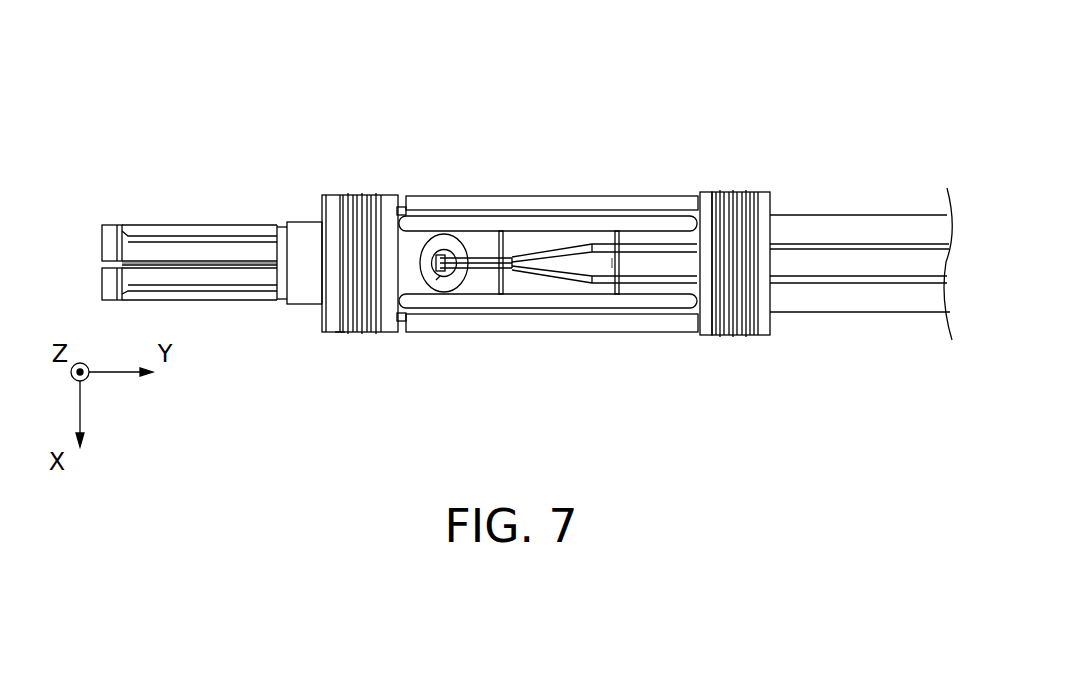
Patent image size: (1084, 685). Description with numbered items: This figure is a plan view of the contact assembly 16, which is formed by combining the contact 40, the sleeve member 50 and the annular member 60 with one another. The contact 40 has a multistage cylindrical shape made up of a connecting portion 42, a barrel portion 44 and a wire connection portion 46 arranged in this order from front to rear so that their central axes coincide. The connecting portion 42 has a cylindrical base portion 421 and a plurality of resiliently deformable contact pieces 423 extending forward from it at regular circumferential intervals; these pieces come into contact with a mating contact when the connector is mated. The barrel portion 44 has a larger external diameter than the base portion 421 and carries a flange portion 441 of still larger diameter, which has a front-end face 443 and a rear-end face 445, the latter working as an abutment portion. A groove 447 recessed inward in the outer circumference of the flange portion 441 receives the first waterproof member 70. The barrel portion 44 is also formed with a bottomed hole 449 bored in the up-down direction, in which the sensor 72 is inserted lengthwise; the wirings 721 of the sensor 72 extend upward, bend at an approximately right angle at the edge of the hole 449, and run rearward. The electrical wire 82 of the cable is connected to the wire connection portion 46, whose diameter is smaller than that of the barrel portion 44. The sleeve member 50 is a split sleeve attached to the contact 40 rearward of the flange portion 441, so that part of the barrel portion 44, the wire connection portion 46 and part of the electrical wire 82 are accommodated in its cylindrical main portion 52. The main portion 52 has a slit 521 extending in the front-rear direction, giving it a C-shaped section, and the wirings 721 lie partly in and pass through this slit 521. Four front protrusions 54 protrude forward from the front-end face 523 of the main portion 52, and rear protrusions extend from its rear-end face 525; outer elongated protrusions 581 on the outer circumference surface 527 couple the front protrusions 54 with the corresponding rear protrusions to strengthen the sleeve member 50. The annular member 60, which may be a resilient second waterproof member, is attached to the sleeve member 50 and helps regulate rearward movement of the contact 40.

The contact assembly 16 is at (432, 34).
The contact 40 is at (681, 231).
The barrel portion 44 is at (473, 243).
The rear-end face 445 is at (437, 251).
The flange portion 441 is at (325, 196).
The first waterproof member 70 is at (358, 194).
The front protrusions 54 is at (402, 195).
The sensor 72 is at (453, 236).
The outer circumference surface 527 is at (540, 200).
The outer elongated protrusions 581 is at (607, 203).
The slit 521 is at (628, 263).
The annular member 60 is at (743, 192).
The wirings 721 is at (870, 282).
The contact pieces 423 is at (162, 292).
The base portion 421 is at (303, 263).
The connecting portion 42 is at (212, 299).
The front-end face 443 is at (317, 272).
The groove 447 is at (342, 345).
The front-end face 523 is at (400, 332).
The hole 449 is at (440, 292).
The main portion 52 is at (532, 333).
The sleeve member 50 is at (658, 248).
The wire connection portion 46 is at (558, 285).
The rear-end face 525 is at (704, 332).
The electrical wire 82 is at (868, 300).